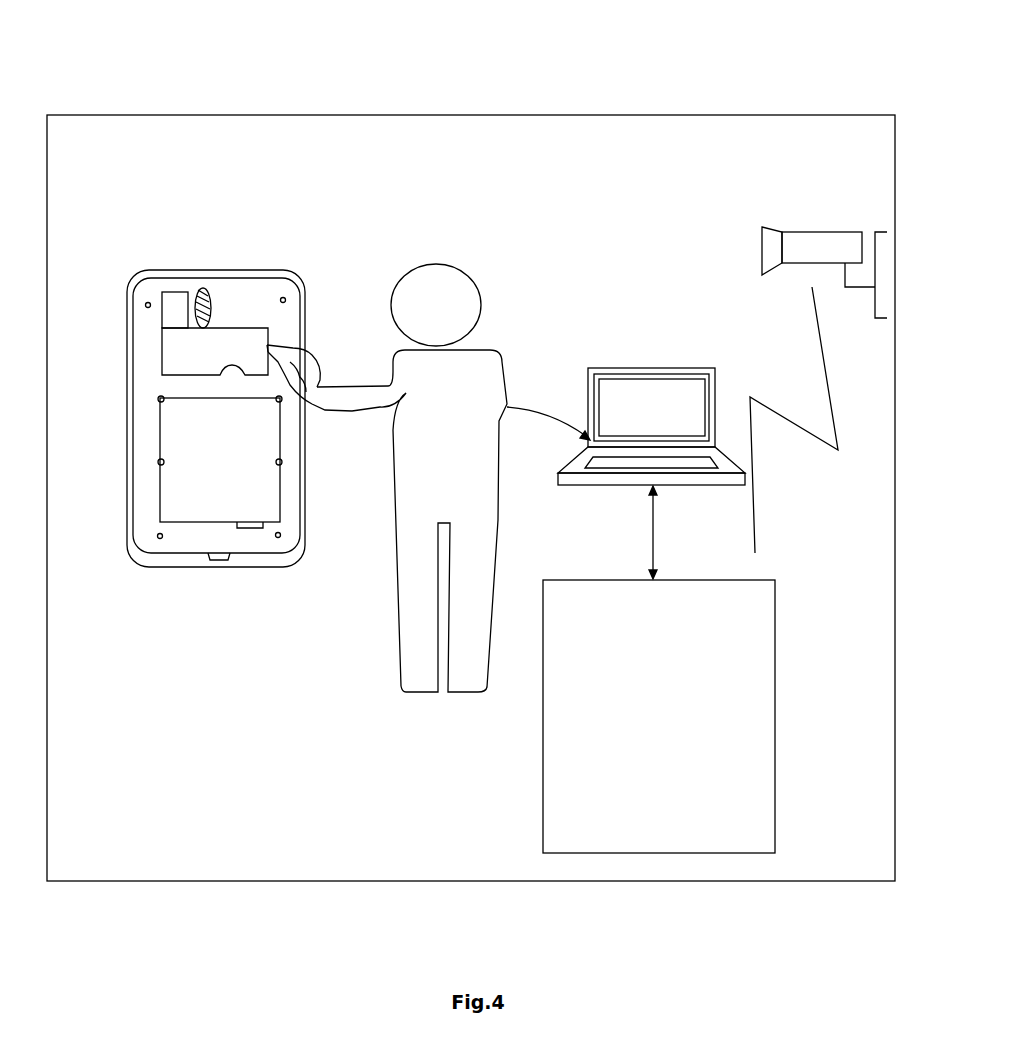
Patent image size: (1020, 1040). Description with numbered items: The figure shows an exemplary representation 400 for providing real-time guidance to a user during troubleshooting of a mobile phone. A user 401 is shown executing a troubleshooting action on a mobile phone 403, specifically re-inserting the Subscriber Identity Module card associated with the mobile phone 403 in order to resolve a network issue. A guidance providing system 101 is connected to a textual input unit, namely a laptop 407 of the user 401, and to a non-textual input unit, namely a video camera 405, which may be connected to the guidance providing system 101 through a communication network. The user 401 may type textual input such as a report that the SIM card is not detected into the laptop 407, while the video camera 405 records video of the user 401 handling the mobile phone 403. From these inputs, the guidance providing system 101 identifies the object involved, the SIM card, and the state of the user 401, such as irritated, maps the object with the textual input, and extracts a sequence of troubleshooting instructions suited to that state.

The exemplary representation 400 is at (817, 103).
The user 401 is at (488, 347).
The mobile phone 403 is at (253, 269).
The video camera 405 is at (755, 243).
The laptop 407 is at (623, 352).
The guidance providing system 101 is at (659, 716).